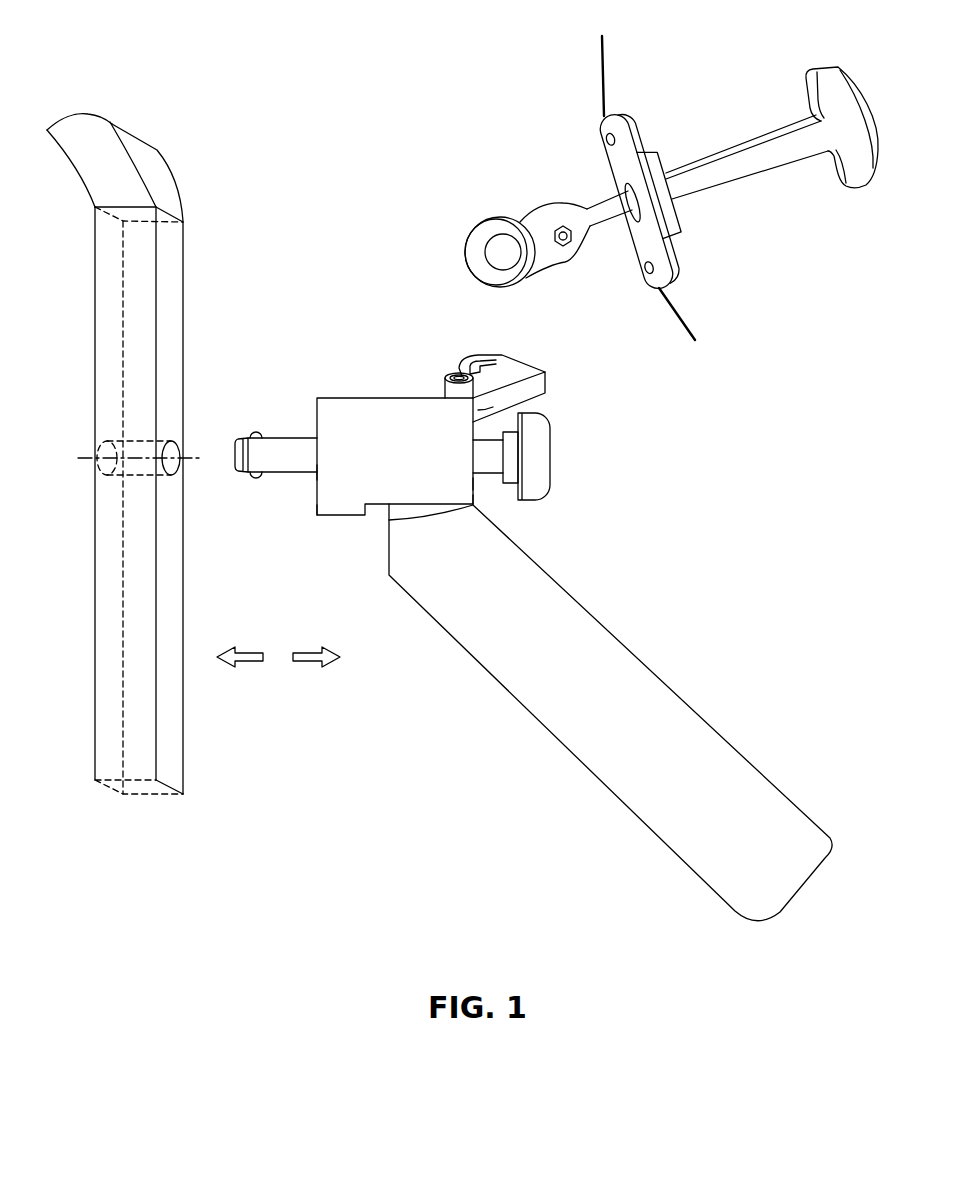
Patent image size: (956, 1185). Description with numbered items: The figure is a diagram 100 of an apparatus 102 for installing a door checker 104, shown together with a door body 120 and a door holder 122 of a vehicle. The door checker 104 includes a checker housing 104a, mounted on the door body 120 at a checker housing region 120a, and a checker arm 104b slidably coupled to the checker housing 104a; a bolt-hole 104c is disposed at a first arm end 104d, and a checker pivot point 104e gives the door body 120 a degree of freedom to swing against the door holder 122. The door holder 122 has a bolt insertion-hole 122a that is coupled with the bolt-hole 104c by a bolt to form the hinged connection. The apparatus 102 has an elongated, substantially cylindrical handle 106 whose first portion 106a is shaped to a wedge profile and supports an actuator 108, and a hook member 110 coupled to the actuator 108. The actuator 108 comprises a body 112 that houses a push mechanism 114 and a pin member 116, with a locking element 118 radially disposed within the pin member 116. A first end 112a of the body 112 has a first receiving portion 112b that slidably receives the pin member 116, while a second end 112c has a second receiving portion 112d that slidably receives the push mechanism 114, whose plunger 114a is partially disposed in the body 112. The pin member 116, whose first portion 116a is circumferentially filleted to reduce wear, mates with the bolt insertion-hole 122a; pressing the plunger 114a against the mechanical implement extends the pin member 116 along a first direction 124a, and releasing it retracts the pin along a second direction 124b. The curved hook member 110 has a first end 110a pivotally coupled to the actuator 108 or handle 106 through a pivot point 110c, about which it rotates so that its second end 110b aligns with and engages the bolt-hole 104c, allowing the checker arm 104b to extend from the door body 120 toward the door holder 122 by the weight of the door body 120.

The diagram 100 is at (118, 92).
The apparatus 102 is at (708, 543).
The door checker 104 is at (828, 48).
The checker housing 104a is at (618, 114).
The checker arm 104b is at (723, 186).
The bolt-hole 104c is at (500, 250).
The first arm end 104d is at (472, 262).
The checker pivot point 104e is at (552, 228).
The handle 106 is at (708, 863).
The first portion 106a is at (388, 566).
The actuator 108 is at (305, 390).
The hook member 110 is at (540, 388).
The first end 110a is at (434, 378).
The second end 110b is at (475, 360).
The pivot point 110c is at (450, 379).
The body 112 is at (365, 397).
The first end 112a is at (309, 520).
The first receiving portion 112b is at (301, 484).
The second end 112c is at (489, 511).
The second receiving portion 112d is at (486, 486).
The push mechanism 114 is at (570, 481).
The plunger 114a is at (553, 462).
The pin member 116 is at (283, 437).
The first portion 116a is at (243, 437).
The locking element 118 is at (256, 478).
The door body 120 is at (605, 85).
The checker housing region 120a is at (588, 134).
The door holder 122 is at (100, 305).
The bolt insertion-hole 122a is at (183, 443).
The first direction 124a is at (255, 661).
The second direction 124b is at (307, 663).